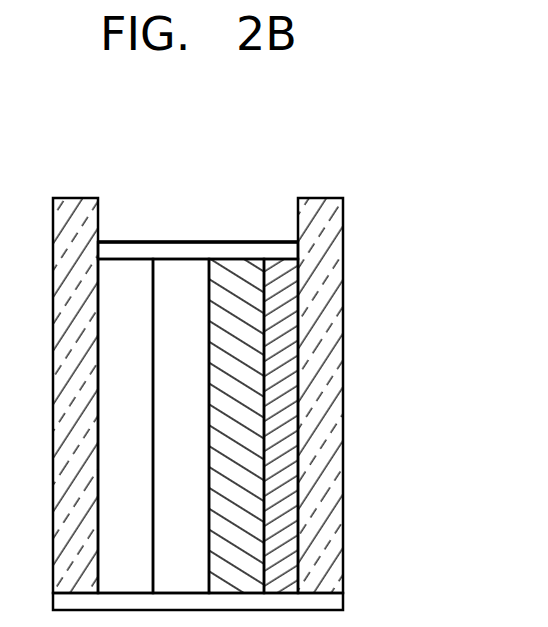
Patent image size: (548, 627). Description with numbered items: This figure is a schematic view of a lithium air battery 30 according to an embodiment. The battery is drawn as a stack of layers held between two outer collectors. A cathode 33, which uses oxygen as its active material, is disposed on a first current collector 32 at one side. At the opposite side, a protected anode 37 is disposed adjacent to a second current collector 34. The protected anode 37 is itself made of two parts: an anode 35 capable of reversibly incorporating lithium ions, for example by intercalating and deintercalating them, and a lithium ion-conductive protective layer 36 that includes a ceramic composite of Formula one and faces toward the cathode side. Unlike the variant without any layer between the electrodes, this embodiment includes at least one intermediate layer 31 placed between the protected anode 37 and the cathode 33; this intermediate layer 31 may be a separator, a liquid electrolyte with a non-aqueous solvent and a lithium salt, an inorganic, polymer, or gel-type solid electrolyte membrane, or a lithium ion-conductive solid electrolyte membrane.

The lithium air battery 30 is at (373, 169).
The intermediate layer 31 is at (177, 273).
The first current collector 32 is at (78, 207).
The cathode 33 is at (122, 273).
The second current collector 34 is at (322, 208).
The anode 35 is at (282, 273).
The lithium ion-conductive protective layer 36 is at (233, 273).
The protected anode 37 is at (278, 156).